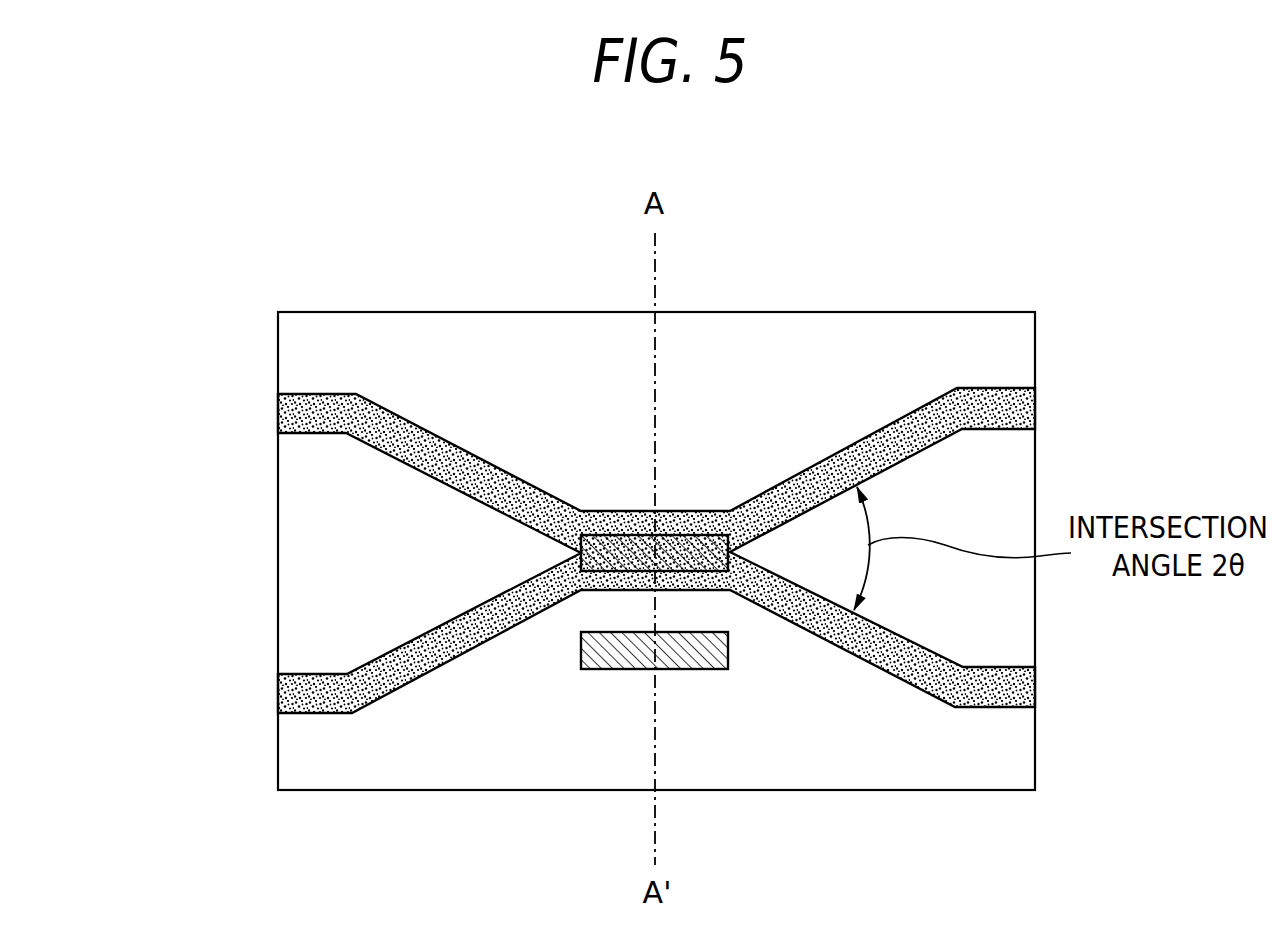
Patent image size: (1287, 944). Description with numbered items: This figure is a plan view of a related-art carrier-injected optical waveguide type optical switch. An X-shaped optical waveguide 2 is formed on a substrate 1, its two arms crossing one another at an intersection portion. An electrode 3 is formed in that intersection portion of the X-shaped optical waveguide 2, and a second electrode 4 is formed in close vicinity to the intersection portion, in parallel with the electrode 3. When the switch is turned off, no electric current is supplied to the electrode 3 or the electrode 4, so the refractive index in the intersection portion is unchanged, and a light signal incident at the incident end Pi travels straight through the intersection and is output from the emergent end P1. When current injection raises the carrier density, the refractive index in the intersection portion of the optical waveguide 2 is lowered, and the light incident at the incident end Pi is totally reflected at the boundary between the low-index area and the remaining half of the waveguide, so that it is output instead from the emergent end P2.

The substrate 1 is at (415, 310).
The X-shaped optical waveguide 2 is at (912, 425).
The electrode 3 is at (625, 543).
The electrode 4 is at (700, 669).
The incident end Pi is at (278, 415).
The emergent end P1 is at (1036, 683).
The emergent end P2 is at (1036, 403).